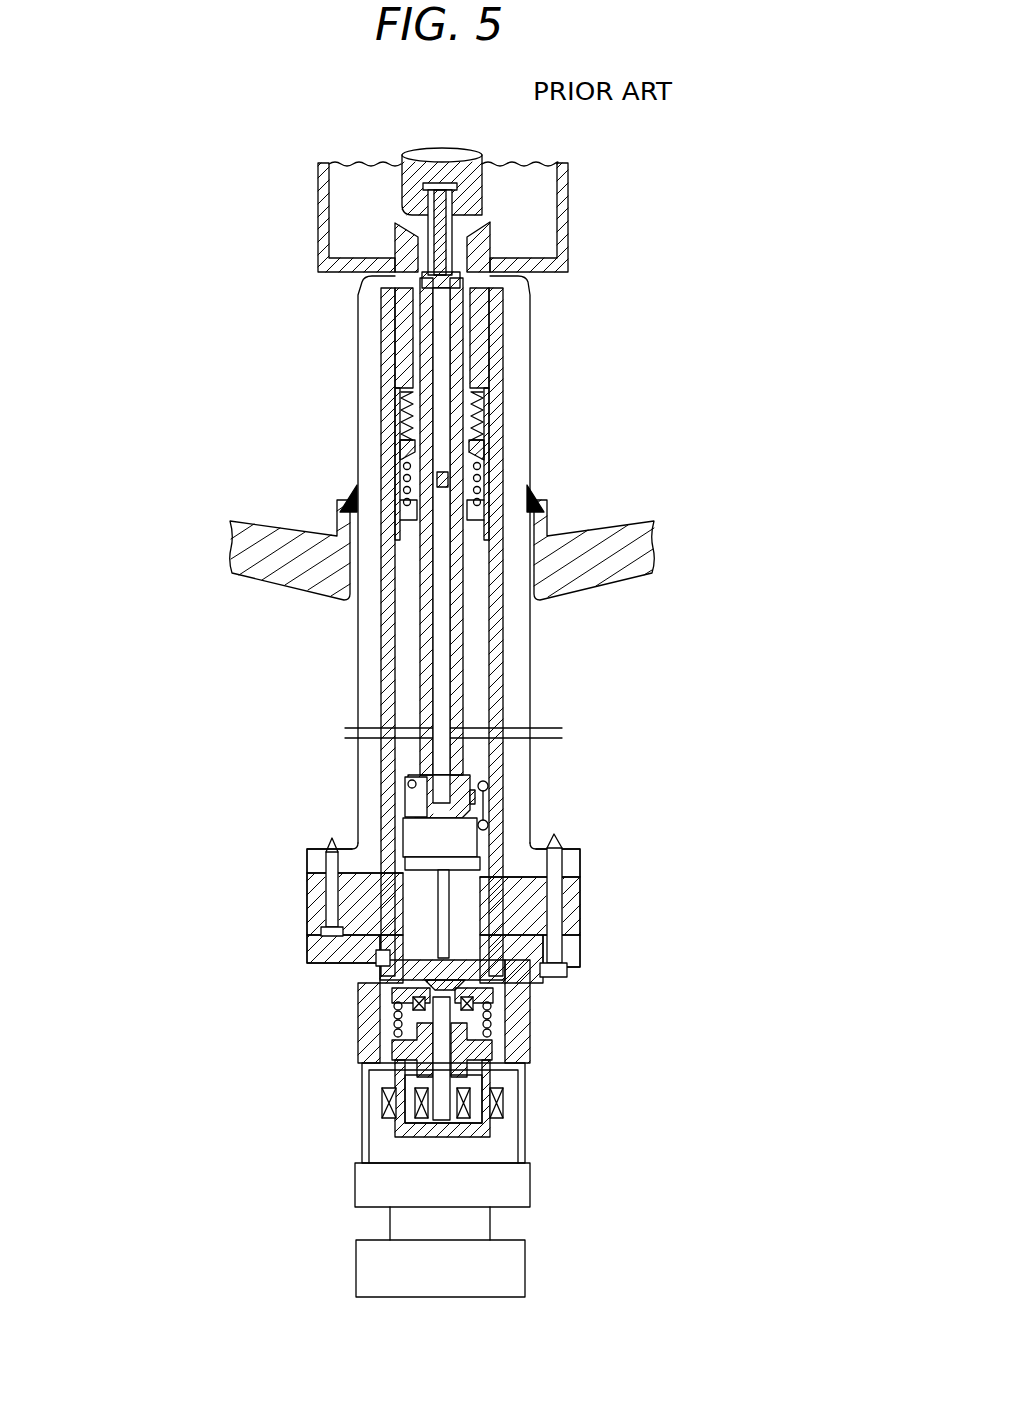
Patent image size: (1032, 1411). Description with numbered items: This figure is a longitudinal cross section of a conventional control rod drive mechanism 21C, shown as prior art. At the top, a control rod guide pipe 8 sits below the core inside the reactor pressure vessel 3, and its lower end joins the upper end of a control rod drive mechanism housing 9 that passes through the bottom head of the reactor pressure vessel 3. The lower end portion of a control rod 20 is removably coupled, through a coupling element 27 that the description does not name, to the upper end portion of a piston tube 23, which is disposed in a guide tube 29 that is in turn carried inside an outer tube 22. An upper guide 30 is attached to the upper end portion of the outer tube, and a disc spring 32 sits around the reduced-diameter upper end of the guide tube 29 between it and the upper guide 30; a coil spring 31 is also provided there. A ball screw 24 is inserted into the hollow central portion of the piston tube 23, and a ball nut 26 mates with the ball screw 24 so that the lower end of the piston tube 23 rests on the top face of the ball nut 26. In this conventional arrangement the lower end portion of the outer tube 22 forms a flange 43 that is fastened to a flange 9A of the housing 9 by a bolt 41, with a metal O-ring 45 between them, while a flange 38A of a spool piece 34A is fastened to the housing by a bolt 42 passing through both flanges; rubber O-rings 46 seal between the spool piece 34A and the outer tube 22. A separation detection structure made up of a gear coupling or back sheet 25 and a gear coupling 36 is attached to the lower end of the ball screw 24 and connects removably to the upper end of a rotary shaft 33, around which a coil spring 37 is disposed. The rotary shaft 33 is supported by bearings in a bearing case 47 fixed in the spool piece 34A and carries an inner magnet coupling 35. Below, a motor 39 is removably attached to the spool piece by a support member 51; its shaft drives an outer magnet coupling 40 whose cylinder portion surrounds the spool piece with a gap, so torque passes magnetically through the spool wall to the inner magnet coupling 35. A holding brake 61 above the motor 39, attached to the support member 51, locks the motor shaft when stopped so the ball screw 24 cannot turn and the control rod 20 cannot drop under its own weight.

The reactor pressure vessel 3 is at (622, 588).
The control rod guide pipe 8 is at (318, 200).
The control rod drive mechanism housing 9 is at (518, 688).
The flange of the control rod drive mechanism housing 9A is at (562, 856).
The control rod 20 is at (482, 168).
The conventional control rod drive mechanism 21C is at (410, 1081).
The outer tube 22 is at (502, 643).
The piston tube 23 is at (430, 665).
The ball screw 24 is at (445, 913).
The gear coupling (back sheet) 25 is at (498, 977).
The ball nut 26 is at (452, 828).
The injection nozzle tube 27 is at (455, 225).
The guide tube 29 is at (393, 693).
The upper guide 30 is at (397, 335).
The coil spring 31 is at (480, 478).
The disc spring 32 is at (485, 398).
The rotary shaft 33 is at (392, 998).
The spool piece 34A is at (490, 996).
The inner magnet coupling 35 is at (413, 1098).
The gear coupling 36 is at (520, 1022).
The coil spring 37 is at (492, 1035).
The flange of the spool piece 38A is at (568, 952).
The motor 39 is at (515, 1270).
The outer magnet coupling 40 is at (380, 1145).
The bolt 41 is at (330, 860).
The bolt 42 is at (552, 930).
The flange of the outer tube 43 is at (572, 890).
The metal O-ring 45 is at (368, 873).
The rubber O-ring 46 is at (383, 966).
The bearing case 47 is at (400, 1058).
The support member 51 is at (362, 1122).
The holding brake 61 is at (365, 1190).